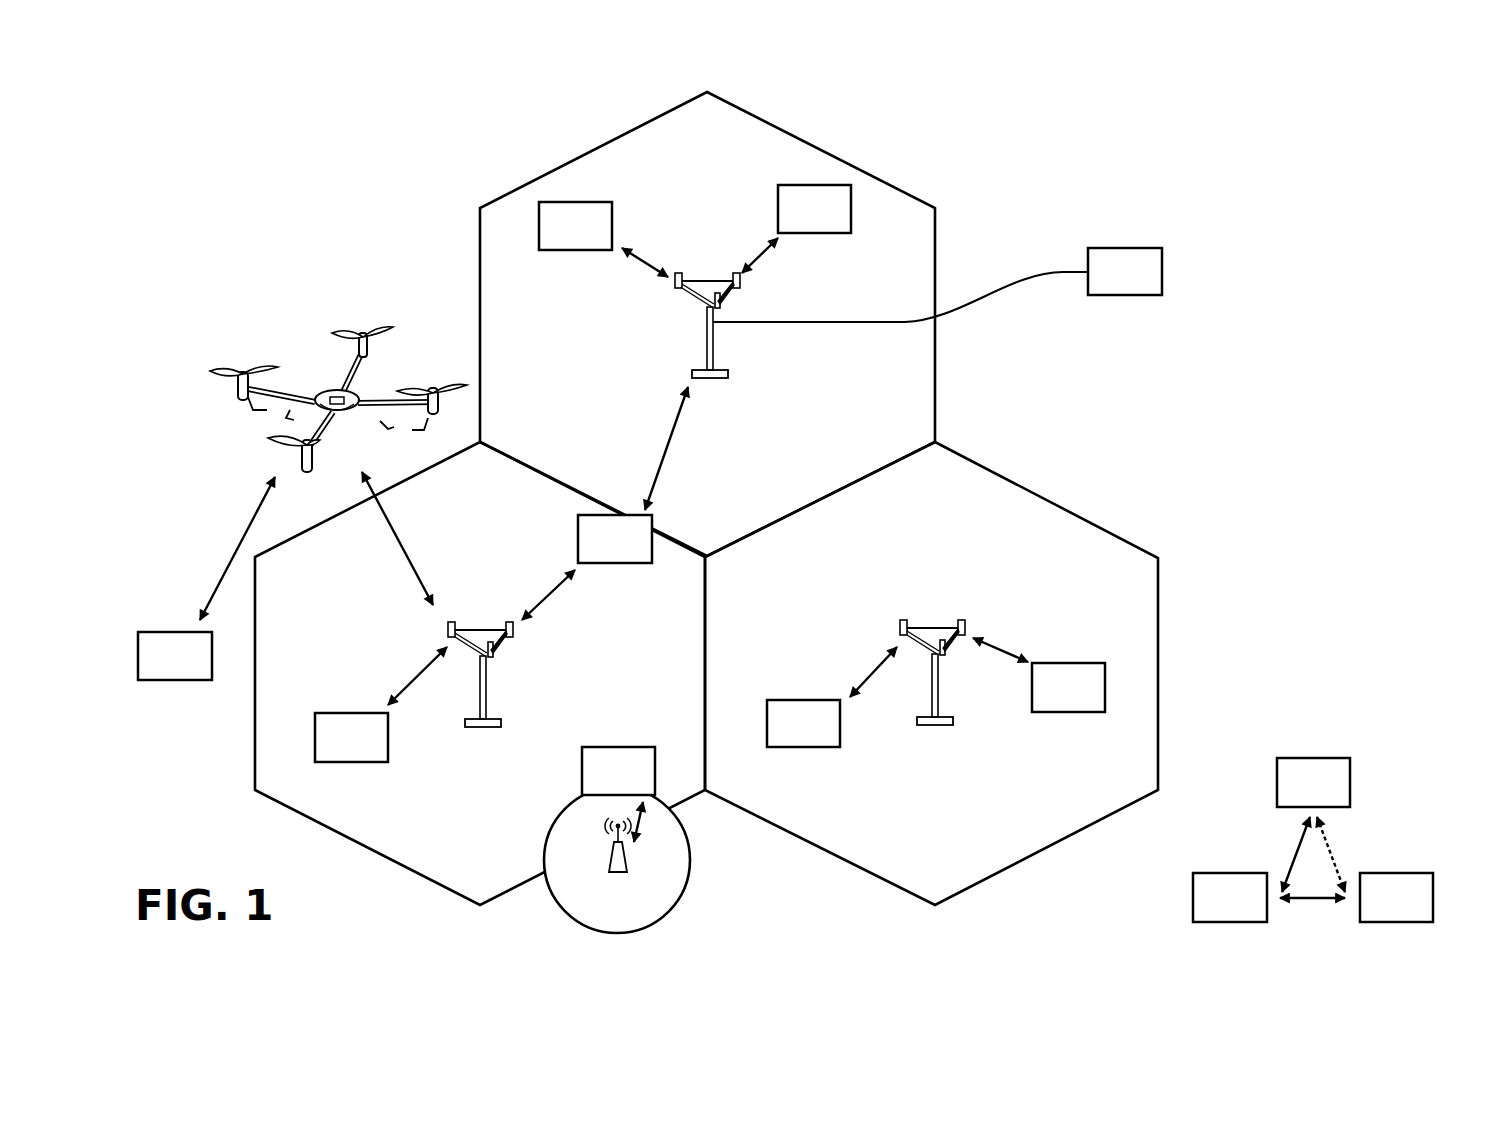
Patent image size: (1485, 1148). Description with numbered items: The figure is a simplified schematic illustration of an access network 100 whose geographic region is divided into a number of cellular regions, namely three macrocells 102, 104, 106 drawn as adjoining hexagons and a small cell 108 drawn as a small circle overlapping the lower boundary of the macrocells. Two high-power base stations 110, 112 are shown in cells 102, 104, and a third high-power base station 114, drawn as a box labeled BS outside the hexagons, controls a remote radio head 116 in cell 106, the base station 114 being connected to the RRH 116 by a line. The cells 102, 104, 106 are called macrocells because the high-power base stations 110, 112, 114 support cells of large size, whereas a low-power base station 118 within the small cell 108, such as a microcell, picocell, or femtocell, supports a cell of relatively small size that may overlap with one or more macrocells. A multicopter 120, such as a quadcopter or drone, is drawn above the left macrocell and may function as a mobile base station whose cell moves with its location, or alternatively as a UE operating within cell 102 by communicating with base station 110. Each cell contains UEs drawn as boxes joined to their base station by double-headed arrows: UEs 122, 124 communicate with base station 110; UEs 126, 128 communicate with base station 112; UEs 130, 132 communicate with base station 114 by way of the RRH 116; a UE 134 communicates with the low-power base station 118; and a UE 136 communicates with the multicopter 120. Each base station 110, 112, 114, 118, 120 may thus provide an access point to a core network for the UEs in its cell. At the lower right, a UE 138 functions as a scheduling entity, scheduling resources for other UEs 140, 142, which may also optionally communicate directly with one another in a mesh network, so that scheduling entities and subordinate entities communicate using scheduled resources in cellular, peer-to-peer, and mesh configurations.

The access network 100 is at (1088, 141).
The macrocell 102 is at (255, 782).
The macrocell 104 is at (1081, 517).
The macrocell 106 is at (641, 126).
The small cell 108 is at (557, 814).
The high-power base station 110 is at (482, 629).
The high-power base station 112 is at (935, 628).
The high-power base station 114 is at (1143, 296).
The remote radio head 116 is at (708, 279).
The low-power base station 118 is at (617, 873).
The multicopter 120 is at (337, 333).
The UE 122 is at (332, 713).
The UE 124 is at (620, 564).
The UE 126 is at (788, 700).
The UE 128 is at (1063, 663).
The UE 130 is at (566, 251).
The UE 132 is at (834, 234).
The UE 134 is at (613, 747).
The UE 136 is at (158, 632).
The UE 138 is at (1235, 873).
The UE 140 is at (1318, 758).
The UE 142 is at (1400, 873).